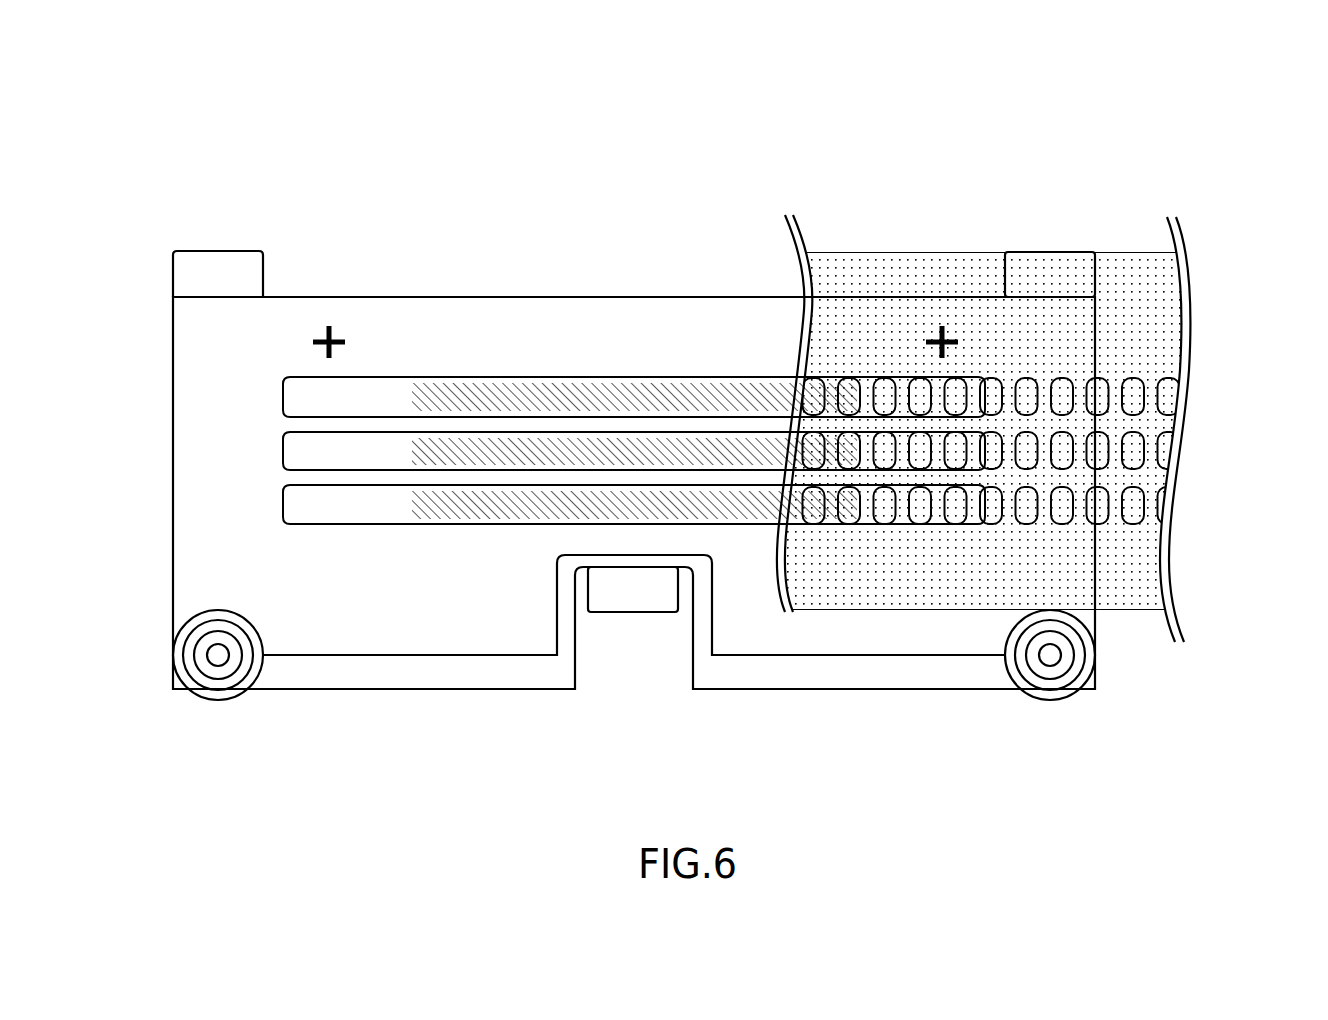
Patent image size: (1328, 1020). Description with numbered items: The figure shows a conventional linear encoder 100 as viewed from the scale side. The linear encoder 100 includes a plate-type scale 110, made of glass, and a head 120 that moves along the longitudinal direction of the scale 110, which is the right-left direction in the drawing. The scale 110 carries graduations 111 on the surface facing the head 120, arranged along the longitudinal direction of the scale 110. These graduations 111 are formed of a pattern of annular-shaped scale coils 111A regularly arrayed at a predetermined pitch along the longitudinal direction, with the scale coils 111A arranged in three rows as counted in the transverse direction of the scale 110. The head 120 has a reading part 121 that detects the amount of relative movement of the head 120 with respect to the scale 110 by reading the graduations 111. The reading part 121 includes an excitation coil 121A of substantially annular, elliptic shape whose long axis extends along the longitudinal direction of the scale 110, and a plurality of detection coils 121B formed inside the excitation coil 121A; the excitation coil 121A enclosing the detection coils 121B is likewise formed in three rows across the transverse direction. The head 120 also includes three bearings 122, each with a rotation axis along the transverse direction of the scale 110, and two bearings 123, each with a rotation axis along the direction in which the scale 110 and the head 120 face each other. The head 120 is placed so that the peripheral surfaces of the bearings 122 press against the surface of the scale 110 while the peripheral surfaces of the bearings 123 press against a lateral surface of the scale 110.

The linear encoder 100 is at (926, 142).
The scale 110 is at (1127, 262).
The graduations 111 is at (991, 451).
The scale coils 111A is at (1098, 522).
The head 120 is at (555, 262).
The reading part 121 is at (456, 348).
The excitation coil 121A is at (283, 403).
The detection coils 121B is at (587, 386).
The bearings 122 is at (183, 273).
The bearings 123 is at (230, 703).